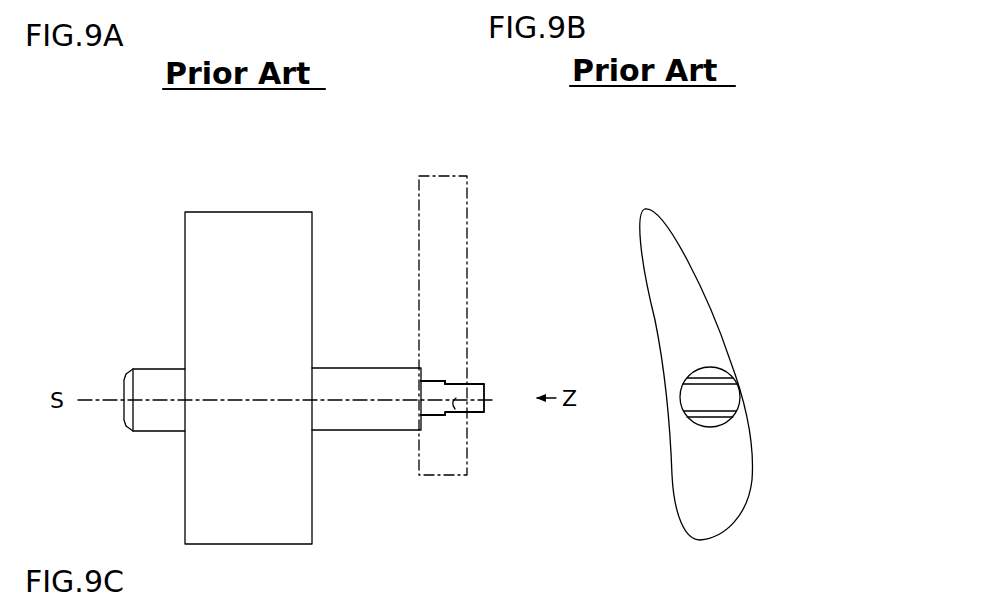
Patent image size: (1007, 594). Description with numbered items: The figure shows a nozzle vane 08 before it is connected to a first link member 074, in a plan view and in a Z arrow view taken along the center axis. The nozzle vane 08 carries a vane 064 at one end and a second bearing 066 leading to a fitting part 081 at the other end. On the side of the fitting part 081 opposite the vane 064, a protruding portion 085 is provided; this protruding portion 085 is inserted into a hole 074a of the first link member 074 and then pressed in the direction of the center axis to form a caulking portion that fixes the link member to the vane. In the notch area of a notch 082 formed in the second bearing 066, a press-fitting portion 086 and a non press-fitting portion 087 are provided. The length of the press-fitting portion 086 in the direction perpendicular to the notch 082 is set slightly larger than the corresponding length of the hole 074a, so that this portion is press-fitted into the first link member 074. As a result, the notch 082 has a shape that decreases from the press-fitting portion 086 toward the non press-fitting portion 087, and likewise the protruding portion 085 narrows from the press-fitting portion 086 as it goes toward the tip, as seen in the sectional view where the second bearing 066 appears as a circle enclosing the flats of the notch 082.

In FIG. 9A, the nozzle vane 08 is at (163, 170).
In FIG. 9B, the nozzle vane 08 is at (718, 165).
In FIG. 9A, the vane 064 is at (239, 225).
In FIG. 9B, the vane 064 is at (678, 236).
In FIG. 9A, the second bearing 066 is at (338, 413).
In FIG. 9B, the second bearing 066 is at (698, 377).
In FIG. 9A, the first link member 074 is at (467, 200).
In FIG. 9A, the hole 074a is at (472, 415).
In FIG. 9A, the fitting part 081 is at (460, 400).
In FIG. 9A, the notch 082 is at (443, 432).
In FIG. 9B, the notch 082 is at (697, 422).
In FIG. 9A, the protruding portion 085 is at (474, 381).
In FIG. 9B, the protruding portion 085 is at (726, 398).
In FIG. 9A, the press-fitting portion 086 is at (421, 380).
In FIG. 9B, the press-fitting portion 086 is at (688, 374).
In FIG. 9A, the non press-fitting portion 087 is at (466, 381).
In FIG. 9B, the non press-fitting portion 087 is at (718, 377).